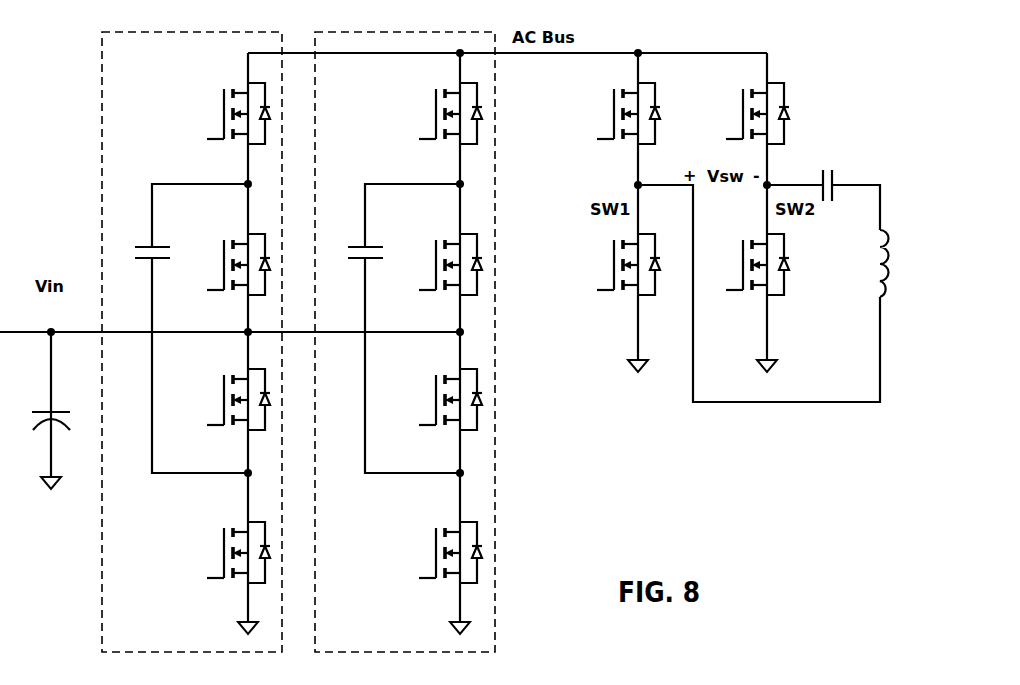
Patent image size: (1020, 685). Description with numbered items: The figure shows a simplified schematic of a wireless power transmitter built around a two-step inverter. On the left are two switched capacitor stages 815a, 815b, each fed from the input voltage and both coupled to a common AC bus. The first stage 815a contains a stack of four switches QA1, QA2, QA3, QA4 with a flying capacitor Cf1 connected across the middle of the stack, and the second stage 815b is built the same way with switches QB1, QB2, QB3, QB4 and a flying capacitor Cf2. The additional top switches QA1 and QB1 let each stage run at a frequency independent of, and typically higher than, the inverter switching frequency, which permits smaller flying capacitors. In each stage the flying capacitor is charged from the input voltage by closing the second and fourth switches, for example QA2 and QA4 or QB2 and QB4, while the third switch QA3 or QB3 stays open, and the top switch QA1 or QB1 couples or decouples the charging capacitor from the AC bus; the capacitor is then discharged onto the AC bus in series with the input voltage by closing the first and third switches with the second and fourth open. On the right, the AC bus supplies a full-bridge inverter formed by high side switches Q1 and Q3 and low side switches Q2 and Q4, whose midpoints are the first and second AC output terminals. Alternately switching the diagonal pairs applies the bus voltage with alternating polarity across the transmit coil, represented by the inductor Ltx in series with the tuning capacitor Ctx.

The first switched capacitor stage 815a is at (101, 570).
The second switched capacitor stage 815b is at (495, 392).
The top switch of first switched capacitor stage QA1 is at (226, 113).
The switch of first switched capacitor stage QA2 is at (227, 264).
The switch of first switched capacitor stage QA3 is at (227, 399).
The switch of first switched capacitor stage QA4 is at (226, 552).
The top switch of second switched capacitor stage QB1 is at (439, 113).
The switch of second switched capacitor stage QB2 is at (439, 264).
The switch of second switched capacitor stage QB3 is at (439, 399).
The switch of second switched capacitor stage QB4 is at (439, 552).
The high side inverter switch Q1 is at (620, 113).
The low side inverter switch Q2 is at (624, 264).
The high side inverter switch Q3 is at (751, 113).
The low side inverter switch Q4 is at (752, 264).
The flying capacitor Cf1 is at (179, 328).
The flying capacitor Cf2 is at (392, 328).
The tuning capacitor Ctx is at (828, 171).
The transmit coil inductor Ltx is at (868, 263).